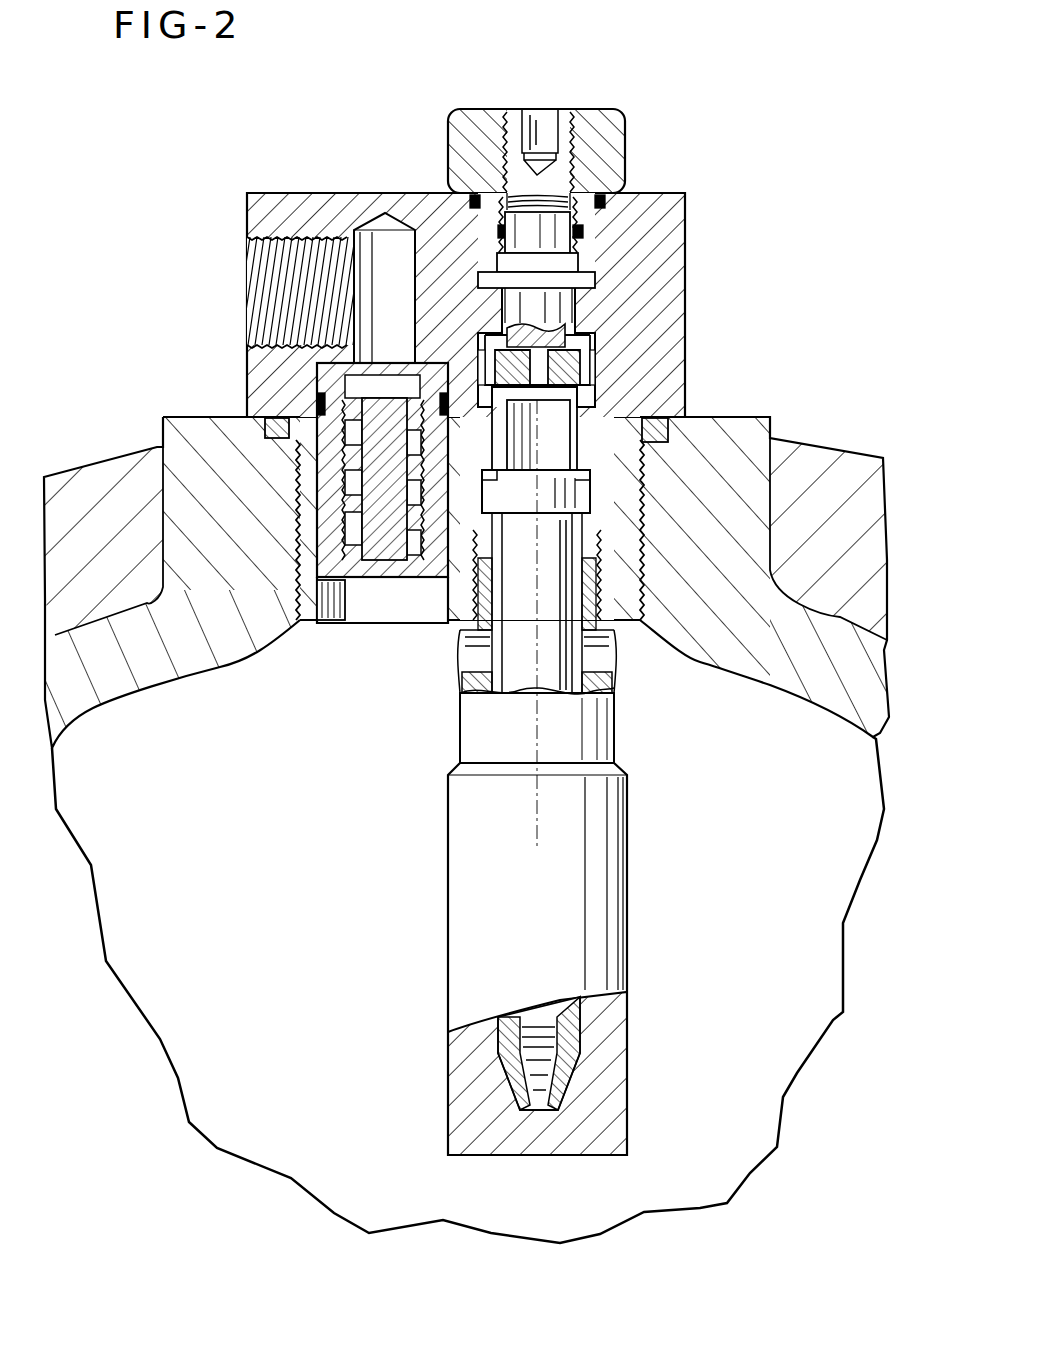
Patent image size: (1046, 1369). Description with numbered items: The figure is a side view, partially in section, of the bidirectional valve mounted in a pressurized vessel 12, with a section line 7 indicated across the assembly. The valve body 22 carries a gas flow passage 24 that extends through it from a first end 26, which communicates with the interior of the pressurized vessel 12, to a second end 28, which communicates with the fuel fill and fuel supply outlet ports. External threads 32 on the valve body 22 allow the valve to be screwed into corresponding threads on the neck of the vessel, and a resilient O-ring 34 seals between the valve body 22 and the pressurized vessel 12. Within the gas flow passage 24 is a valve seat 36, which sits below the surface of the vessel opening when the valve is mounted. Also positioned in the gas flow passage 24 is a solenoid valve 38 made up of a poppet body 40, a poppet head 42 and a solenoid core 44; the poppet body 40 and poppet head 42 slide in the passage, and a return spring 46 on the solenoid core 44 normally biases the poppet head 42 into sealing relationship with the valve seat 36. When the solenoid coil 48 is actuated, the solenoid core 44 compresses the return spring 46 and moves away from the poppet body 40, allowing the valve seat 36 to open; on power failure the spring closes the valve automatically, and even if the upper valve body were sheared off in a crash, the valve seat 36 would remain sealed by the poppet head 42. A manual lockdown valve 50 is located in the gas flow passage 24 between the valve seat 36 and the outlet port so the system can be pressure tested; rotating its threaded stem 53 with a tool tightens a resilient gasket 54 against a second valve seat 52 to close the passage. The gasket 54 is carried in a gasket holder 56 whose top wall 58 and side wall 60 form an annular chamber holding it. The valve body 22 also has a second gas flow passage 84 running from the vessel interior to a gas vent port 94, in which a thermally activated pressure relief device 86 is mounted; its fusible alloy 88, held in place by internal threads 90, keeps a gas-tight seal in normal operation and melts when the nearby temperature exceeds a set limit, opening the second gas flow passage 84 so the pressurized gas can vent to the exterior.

The section line 7- 7 is at (640, 830).
The pressurized vessel 12 is at (118, 690).
The valve body 22 is at (690, 217).
The gas flow passage 24 is at (592, 410).
The first end 26 is at (470, 655).
The second end 28 is at (488, 303).
The external threads 32 is at (300, 612).
The resilient O-ring 34 is at (278, 420).
The valve seat 36 is at (590, 487).
The solenoid valve 38 is at (645, 772).
The poppet body 40 is at (525, 620).
The poppet head 42 is at (555, 500).
The solenoid core 44 is at (572, 1015).
The return spring 46 is at (545, 1057).
The solenoid coil 48 is at (465, 1075).
The manual lockdown valve 50 is at (640, 117).
The second valve seat 52 is at (573, 398).
The threaded stem 53 is at (513, 108).
The resilient gasket 54 is at (490, 357).
The gasket holder 56 is at (590, 343).
The top wall 58 is at (572, 305).
The side wall 60 is at (598, 357).
The second gas flow passage 84 is at (385, 245).
The thermally activated pressure relief device 86 is at (318, 607).
The fusible alloy 88 is at (385, 560).
The internal threads 90 is at (345, 580).
The gas vent port 94 is at (263, 260).